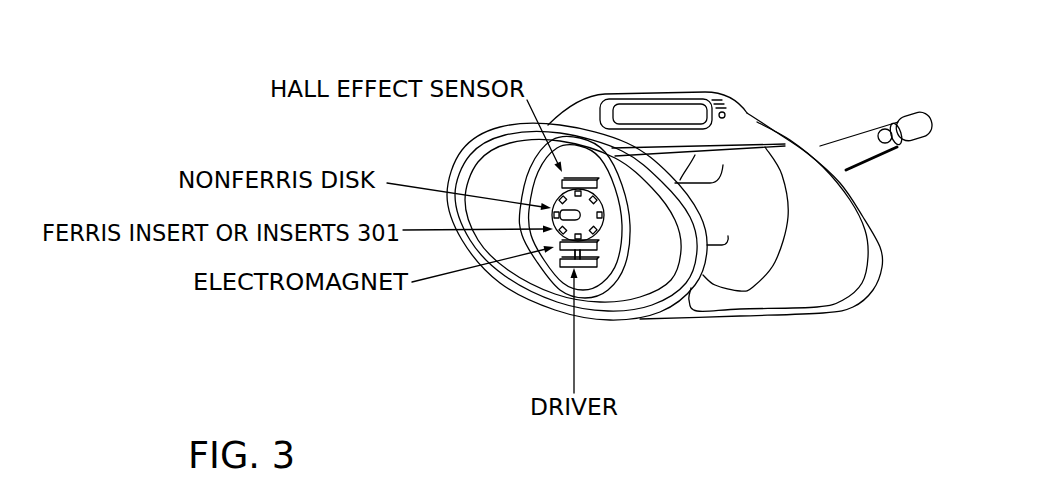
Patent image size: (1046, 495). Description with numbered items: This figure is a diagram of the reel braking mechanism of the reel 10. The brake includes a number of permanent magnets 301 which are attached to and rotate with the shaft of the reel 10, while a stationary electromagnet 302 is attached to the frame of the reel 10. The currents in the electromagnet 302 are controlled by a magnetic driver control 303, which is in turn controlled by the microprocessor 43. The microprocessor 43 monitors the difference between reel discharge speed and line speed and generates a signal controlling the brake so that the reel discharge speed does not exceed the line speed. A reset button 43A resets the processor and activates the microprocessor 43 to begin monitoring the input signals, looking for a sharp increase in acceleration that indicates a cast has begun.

The reel 10 is at (812, 127).
The microprocessor 43 is at (667, 104).
The reset button 43A is at (724, 112).
The permanent magnets 301 is at (603, 193).
The stationary electromagnet 302 is at (598, 245).
The magnetic driver control 303 is at (590, 268).